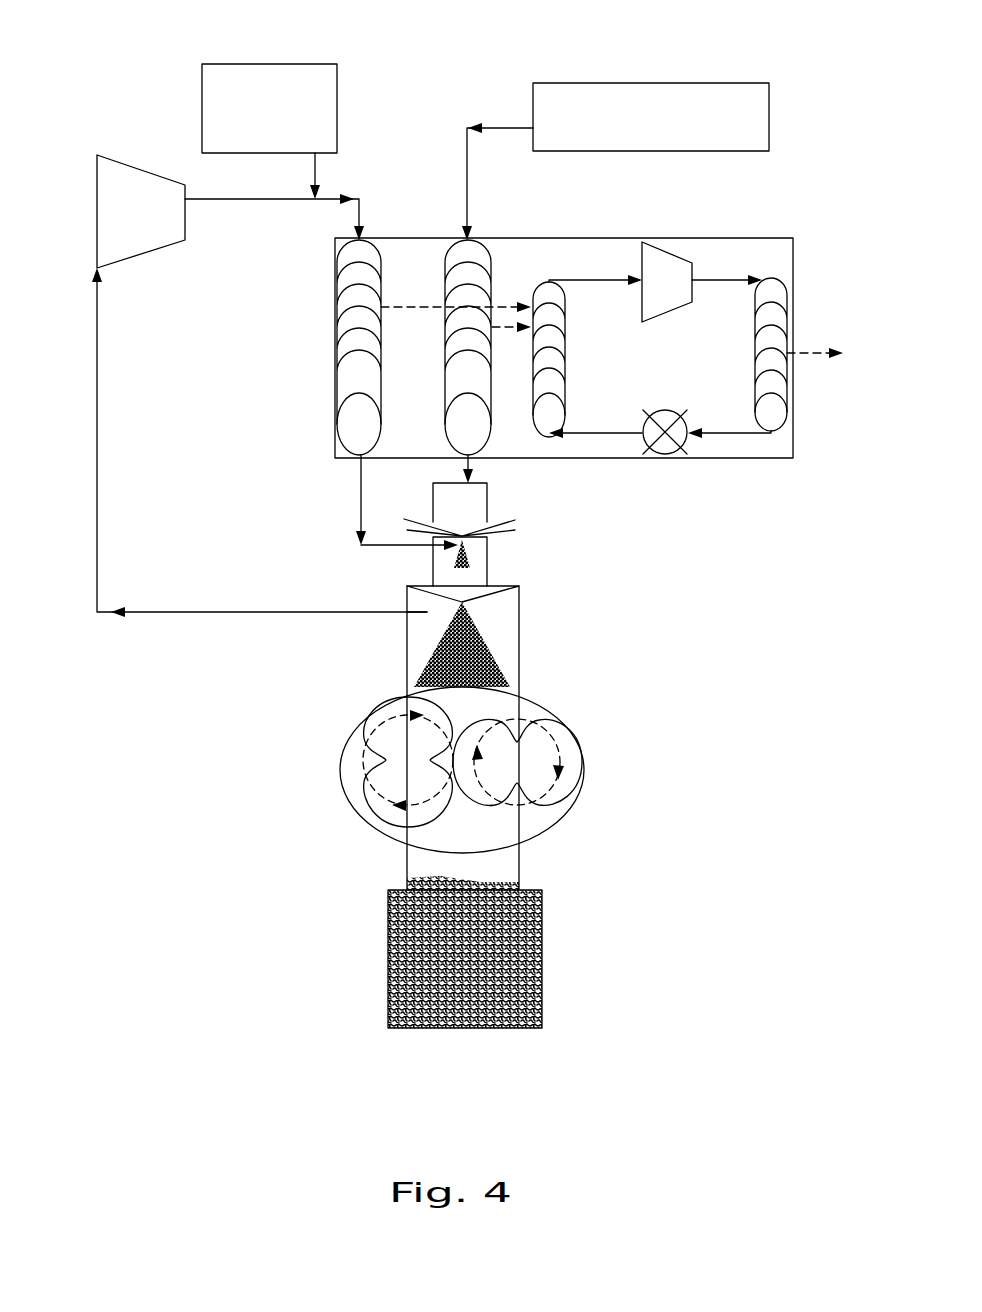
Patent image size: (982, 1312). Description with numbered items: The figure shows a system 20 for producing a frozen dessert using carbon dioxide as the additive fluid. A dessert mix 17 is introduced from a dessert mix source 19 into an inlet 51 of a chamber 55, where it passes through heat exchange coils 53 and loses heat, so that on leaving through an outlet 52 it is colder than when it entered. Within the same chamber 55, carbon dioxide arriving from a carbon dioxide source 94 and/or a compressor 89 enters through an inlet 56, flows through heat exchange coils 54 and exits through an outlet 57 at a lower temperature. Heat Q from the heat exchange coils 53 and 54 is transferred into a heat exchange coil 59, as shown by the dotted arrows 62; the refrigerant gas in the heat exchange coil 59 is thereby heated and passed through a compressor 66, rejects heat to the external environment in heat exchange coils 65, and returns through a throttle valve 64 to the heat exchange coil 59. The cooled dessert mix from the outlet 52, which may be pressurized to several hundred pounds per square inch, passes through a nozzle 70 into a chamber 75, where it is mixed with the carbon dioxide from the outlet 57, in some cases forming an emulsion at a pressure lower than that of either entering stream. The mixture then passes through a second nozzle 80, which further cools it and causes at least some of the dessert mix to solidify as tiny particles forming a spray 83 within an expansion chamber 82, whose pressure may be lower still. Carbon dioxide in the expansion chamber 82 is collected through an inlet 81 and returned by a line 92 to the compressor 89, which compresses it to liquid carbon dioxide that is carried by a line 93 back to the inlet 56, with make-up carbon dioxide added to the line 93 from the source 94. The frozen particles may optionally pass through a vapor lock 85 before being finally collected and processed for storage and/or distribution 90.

The dessert mix 17 is at (512, 128).
The dessert mix source 19 is at (718, 83).
The system 20 is at (112, 813).
The inlet 51 is at (470, 237).
The outlet 52 is at (480, 460).
The heat exchange coils 53 is at (493, 265).
The heat exchange coils 54 is at (335, 360).
The chamber 55 is at (757, 238).
The inlet 56 is at (361, 240).
The outlet 57 is at (358, 461).
The heat exchange coil 59 is at (537, 283).
The dotted arrows 62 is at (405, 308).
The throttle valve 64 is at (645, 422).
The heat exchange coils 65 is at (786, 293).
The compressor 66 is at (679, 252).
The nozzle 70 is at (517, 533).
The chamber 75 is at (473, 553).
The second nozzle 80 is at (428, 605).
The inlet 81 is at (428, 612).
The expansion chamber 82 is at (407, 650).
The spray 83 is at (475, 640).
The vapor lock 85 is at (540, 692).
The compressor 89 is at (97, 215).
The storage and/or distribution 90 is at (543, 957).
The recirculation line 92 is at (99, 440).
The line 93 is at (262, 198).
The carbon dioxide source 94 is at (337, 117).